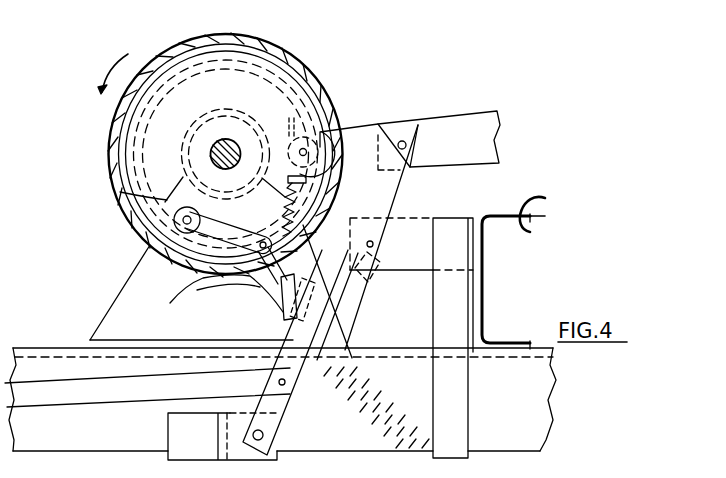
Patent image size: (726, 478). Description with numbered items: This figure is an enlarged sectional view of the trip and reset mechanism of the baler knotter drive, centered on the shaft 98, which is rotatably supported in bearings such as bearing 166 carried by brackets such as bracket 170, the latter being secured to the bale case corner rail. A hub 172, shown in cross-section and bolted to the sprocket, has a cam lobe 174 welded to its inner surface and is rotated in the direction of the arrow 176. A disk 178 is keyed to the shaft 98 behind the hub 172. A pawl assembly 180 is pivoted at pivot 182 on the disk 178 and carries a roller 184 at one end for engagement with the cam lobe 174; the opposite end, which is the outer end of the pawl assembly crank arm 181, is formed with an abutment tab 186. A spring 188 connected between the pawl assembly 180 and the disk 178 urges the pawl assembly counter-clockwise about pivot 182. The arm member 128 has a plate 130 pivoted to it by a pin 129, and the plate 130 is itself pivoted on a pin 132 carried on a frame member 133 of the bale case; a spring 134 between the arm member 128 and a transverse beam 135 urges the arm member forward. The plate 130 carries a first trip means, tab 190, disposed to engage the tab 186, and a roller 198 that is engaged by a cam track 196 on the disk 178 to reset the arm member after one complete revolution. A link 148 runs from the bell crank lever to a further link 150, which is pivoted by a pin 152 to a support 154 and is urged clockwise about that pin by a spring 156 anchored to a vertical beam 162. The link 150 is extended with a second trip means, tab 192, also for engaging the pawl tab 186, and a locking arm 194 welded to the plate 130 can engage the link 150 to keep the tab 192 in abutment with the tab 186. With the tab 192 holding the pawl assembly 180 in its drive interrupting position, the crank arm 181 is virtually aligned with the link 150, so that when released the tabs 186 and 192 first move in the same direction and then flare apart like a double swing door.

The shaft 98 is at (232, 140).
The arm member 128 is at (467, 122).
The pin 129 is at (408, 145).
The plate 130 is at (373, 118).
The pin 132 is at (373, 242).
The frame member 133 is at (352, 272).
The spring 134 is at (537, 192).
The transverse beam 135 is at (482, 290).
The link 148 is at (105, 393).
The further link 150 is at (280, 400).
The pin 152 is at (258, 440).
The support 154 is at (183, 450).
The spring 156 is at (437, 447).
The vertical beam 162 is at (440, 330).
The bearing 166 is at (287, 115).
The bracket 170 is at (125, 300).
The hub 172 is at (283, 54).
The cam lobe 174 is at (130, 127).
The arrow 176 is at (115, 68).
The disk 178 is at (183, 70).
The pawl assembly 180 is at (208, 276).
The pawl assembly crank arm 181 is at (200, 290).
The pivot 182 is at (228, 232).
The roller 184 is at (120, 192).
The tab 186 is at (280, 307).
The spring 188 is at (305, 196).
The tab 190 is at (307, 264).
The tab 192 is at (297, 318).
The extended arm 194 is at (350, 287).
The cam track 196 is at (263, 135).
The roller 198 is at (337, 128).